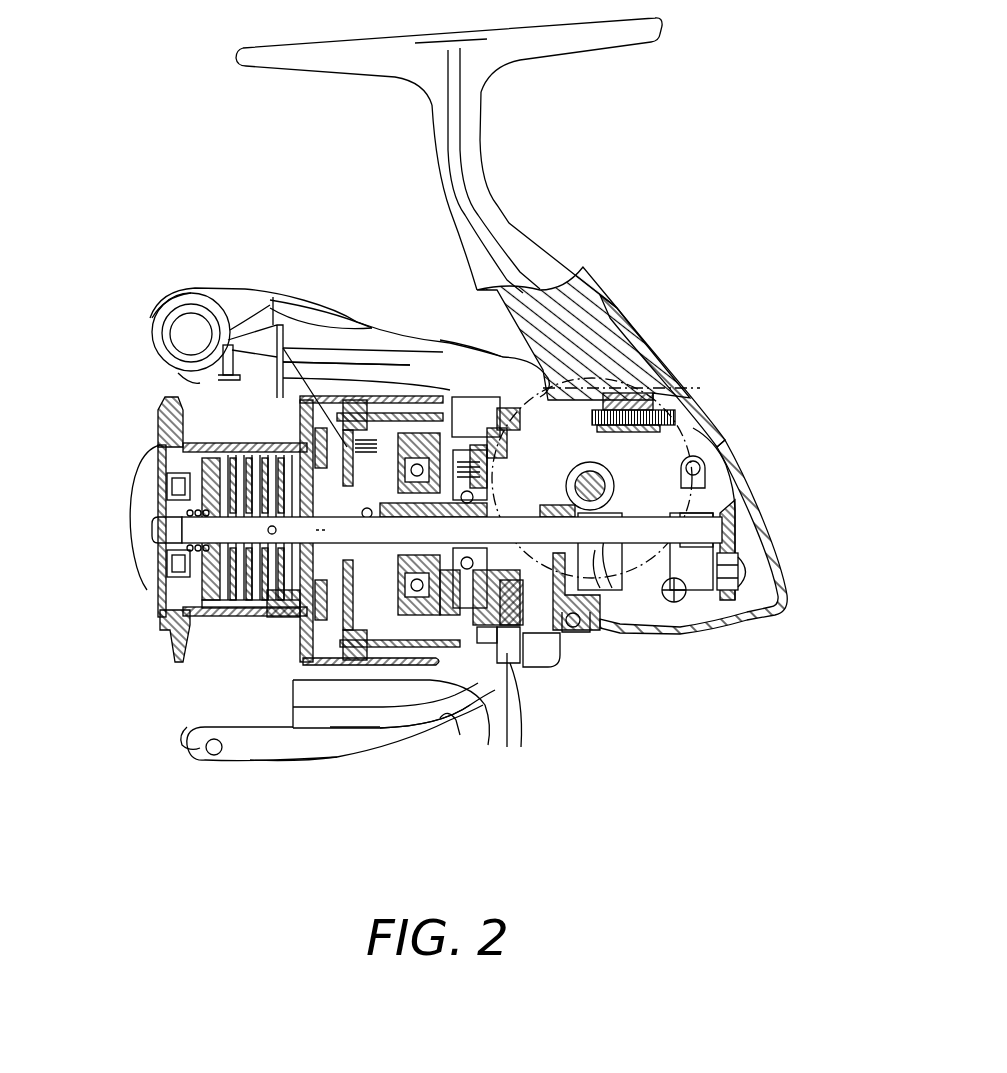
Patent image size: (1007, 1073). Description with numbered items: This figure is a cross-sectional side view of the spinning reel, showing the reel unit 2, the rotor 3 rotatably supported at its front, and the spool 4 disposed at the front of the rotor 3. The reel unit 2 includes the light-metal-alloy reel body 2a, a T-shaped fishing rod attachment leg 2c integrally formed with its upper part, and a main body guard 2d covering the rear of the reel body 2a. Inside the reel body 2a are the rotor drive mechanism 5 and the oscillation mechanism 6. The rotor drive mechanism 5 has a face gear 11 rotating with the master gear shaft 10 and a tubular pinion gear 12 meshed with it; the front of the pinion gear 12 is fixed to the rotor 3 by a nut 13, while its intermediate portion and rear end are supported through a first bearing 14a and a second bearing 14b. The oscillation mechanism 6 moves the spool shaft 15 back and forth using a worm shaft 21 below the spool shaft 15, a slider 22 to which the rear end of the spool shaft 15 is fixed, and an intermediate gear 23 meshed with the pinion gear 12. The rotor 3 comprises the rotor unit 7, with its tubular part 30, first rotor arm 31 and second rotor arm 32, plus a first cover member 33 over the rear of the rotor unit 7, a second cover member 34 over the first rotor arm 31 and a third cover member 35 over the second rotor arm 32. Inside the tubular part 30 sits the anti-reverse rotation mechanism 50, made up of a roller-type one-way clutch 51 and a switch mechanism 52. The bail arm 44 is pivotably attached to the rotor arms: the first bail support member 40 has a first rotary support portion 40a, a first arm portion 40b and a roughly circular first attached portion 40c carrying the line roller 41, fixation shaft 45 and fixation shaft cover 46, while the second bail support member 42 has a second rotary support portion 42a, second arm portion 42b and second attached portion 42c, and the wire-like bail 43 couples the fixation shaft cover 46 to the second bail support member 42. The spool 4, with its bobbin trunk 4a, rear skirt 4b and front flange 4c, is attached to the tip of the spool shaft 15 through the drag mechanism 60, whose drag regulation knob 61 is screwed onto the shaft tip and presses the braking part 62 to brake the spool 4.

The reel unit 2 is at (565, 187).
The reel body 2a is at (670, 392).
The fishing rod attachment leg 2c is at (509, 223).
The main body guard 2d is at (747, 484).
The rotor 3 is at (383, 313).
The spool 4 is at (203, 675).
The bobbin trunk 4a is at (278, 613).
The skirt 4b is at (457, 713).
The front flange 4c is at (173, 662).
The rotor drive mechanism 5 is at (535, 482).
The oscillation mechanism 6 is at (675, 603).
The rotor unit 7 is at (410, 430).
The master gear shaft 10 is at (612, 473).
The face gear 11 is at (622, 300).
The pinion gear 12 is at (538, 668).
The nut 13 is at (273, 297).
The first bearing 14a is at (457, 343).
The second bearing 14b is at (577, 630).
The spool shaft 15 is at (470, 632).
The worm shaft 21 is at (628, 592).
The slider 22 is at (705, 590).
The intermediate gear 23 is at (485, 652).
The tubular part 30 is at (390, 655).
The first rotor arm 31 is at (410, 397).
The second rotor arm 32 is at (328, 720).
The first cover member 33 is at (503, 400).
The second cover member 34 is at (399, 347).
The third cover member 35 is at (477, 660).
The first bail support member 40 is at (240, 300).
The first rotary support portion 40a is at (313, 332).
The first arm portion 40b is at (267, 303).
The first attached portion 40c is at (197, 292).
The line roller 41 is at (160, 292).
The second bail support member 42 is at (257, 755).
The second rotary support portion 42a is at (350, 728).
The second arm portion 42b is at (284, 758).
The second attached portion 42c is at (220, 758).
The bail 43 is at (230, 357).
The bail arm 44 is at (177, 381).
The fixation shaft 45 is at (188, 340).
The fixation shaft cover 46 is at (152, 321).
The anti-reverse rotation mechanism 50 is at (427, 653).
The one-way clutch 51 is at (398, 630).
The switch mechanism 52 is at (553, 667).
The drag mechanism 60 is at (215, 612).
The drag regulation knob 61 is at (143, 580).
The braking part 62 is at (226, 608).